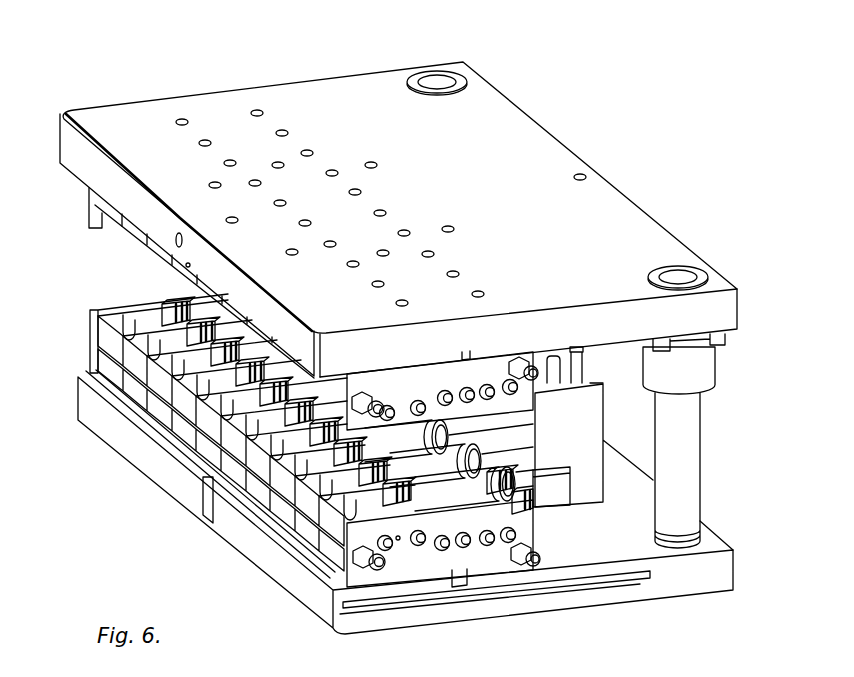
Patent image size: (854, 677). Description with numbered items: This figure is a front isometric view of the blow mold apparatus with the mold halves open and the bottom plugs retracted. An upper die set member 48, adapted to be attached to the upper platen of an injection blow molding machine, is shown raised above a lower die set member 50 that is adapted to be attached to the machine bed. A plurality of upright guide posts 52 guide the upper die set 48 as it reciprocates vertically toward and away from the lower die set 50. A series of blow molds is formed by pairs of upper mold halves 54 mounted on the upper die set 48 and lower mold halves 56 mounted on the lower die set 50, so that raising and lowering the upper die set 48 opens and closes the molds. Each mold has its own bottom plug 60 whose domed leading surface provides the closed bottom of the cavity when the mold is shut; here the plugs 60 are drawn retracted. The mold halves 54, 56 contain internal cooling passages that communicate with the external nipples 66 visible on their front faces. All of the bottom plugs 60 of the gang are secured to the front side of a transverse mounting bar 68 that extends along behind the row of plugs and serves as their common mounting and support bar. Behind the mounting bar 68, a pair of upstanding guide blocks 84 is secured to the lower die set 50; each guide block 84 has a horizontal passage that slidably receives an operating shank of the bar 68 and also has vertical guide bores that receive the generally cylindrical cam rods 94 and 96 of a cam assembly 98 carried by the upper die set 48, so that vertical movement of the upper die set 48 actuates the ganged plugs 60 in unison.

The upper die set member 48 is at (345, 90).
The lower die set member 50 is at (692, 588).
The upright guide post 52 is at (690, 434).
The upper mold half 54 is at (386, 392).
The lower mold half 56 is at (358, 578).
The bottom plug 60 is at (517, 470).
The nipple 66 is at (460, 390).
The transverse mounting bar 68 is at (557, 503).
The guide block 84 is at (587, 422).
The cam rod 94 is at (552, 362).
The cam rod 96 is at (580, 350).
The cam assembly 98 is at (590, 358).